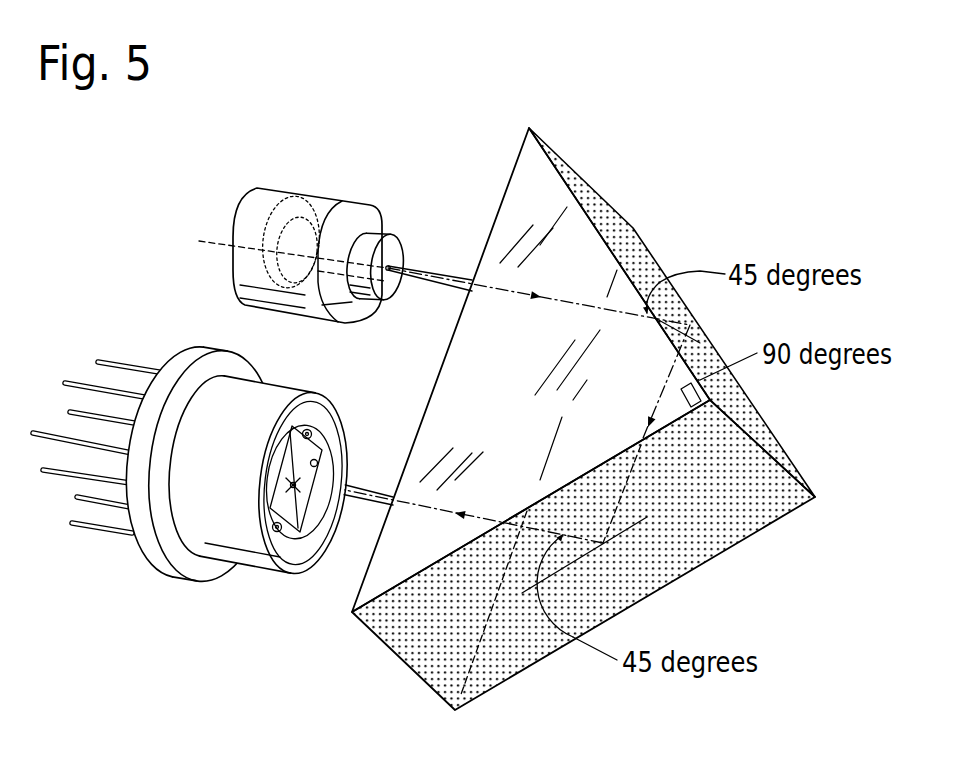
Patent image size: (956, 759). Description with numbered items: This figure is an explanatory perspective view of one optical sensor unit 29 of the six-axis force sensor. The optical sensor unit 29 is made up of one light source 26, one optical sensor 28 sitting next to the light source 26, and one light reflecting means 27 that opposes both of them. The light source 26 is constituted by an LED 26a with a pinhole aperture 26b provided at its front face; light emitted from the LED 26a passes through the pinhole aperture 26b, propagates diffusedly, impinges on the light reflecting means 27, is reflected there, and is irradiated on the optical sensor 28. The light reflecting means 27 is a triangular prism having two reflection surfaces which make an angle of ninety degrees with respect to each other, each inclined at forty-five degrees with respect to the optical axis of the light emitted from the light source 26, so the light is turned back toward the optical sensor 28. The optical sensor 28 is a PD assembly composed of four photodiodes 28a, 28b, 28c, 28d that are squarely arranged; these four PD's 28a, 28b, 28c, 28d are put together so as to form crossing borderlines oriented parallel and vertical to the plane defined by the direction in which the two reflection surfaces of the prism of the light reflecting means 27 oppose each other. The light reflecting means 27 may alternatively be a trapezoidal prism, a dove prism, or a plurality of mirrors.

The light source 26 is at (284, 179).
The LED 26a is at (271, 250).
The pinhole aperture 26b is at (390, 267).
The light reflecting means 27 is at (700, 548).
The optical sensor 28 is at (218, 586).
The PD 28a is at (289, 481).
The PD 28b is at (303, 427).
The PD 28c is at (281, 531).
The PD 28d is at (318, 461).
The optical sensor unit 29 is at (423, 168).